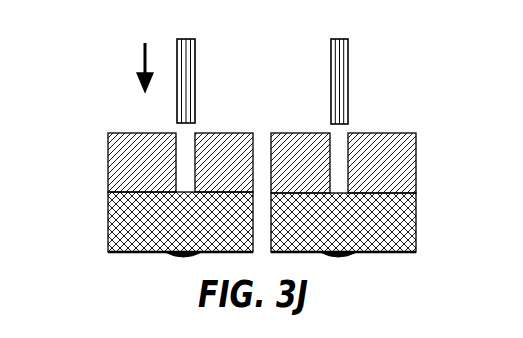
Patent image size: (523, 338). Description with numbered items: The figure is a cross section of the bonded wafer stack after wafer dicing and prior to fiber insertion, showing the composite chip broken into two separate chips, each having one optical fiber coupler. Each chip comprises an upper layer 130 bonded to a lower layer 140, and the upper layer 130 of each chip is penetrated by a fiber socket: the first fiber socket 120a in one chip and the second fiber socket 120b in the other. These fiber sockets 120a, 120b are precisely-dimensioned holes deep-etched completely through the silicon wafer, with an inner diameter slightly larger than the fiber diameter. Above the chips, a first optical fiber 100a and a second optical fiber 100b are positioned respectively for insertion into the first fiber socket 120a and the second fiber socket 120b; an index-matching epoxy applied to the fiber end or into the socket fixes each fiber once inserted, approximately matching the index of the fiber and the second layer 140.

The first optical fiber 100a is at (147, 68).
The second optical fiber 100b is at (377, 68).
The first fiber socket 120a is at (147, 116).
The second fiber socket 120b is at (377, 118).
The upper layer 130 is at (261, 143).
The substrate with lens 140 is at (261, 224).